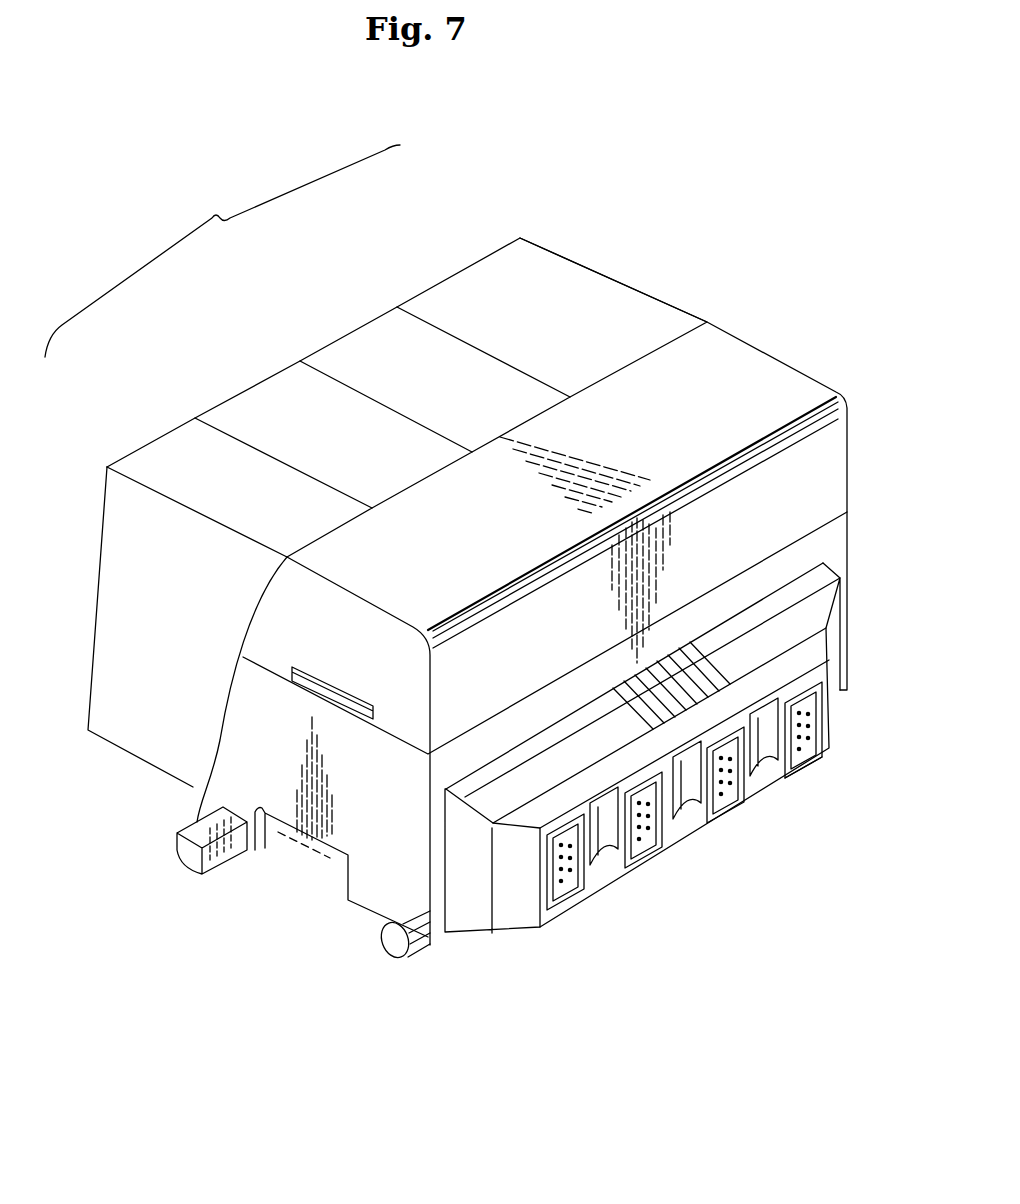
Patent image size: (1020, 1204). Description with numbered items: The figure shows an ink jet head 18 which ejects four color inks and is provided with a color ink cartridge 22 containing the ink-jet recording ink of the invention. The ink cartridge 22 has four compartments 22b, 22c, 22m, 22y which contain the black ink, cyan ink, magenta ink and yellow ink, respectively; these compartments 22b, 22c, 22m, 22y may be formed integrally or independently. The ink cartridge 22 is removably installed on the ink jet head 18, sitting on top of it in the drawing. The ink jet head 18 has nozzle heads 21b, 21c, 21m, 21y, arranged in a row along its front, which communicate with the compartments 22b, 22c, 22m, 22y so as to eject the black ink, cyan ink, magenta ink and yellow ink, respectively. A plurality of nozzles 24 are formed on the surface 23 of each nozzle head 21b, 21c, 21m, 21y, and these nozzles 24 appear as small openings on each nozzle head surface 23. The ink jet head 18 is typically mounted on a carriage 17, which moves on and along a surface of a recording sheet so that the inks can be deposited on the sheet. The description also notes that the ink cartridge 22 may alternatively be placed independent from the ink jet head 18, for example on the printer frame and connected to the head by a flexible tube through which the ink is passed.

The carriage 17 is at (733, 363).
The ink jet head 18 is at (812, 650).
The ink cartridge 22 is at (222, 251).
The compartment 22y is at (175, 440).
The compartment 22m is at (264, 400).
The compartment 22c is at (363, 338).
The compartment 22b is at (466, 284).
The nozzle head 21y is at (568, 886).
The nozzle head 21m is at (645, 838).
The nozzle head 21c is at (727, 793).
The nozzle head 21b is at (808, 742).
The surface 23 is at (805, 708).
The nozzles 24 is at (793, 760).